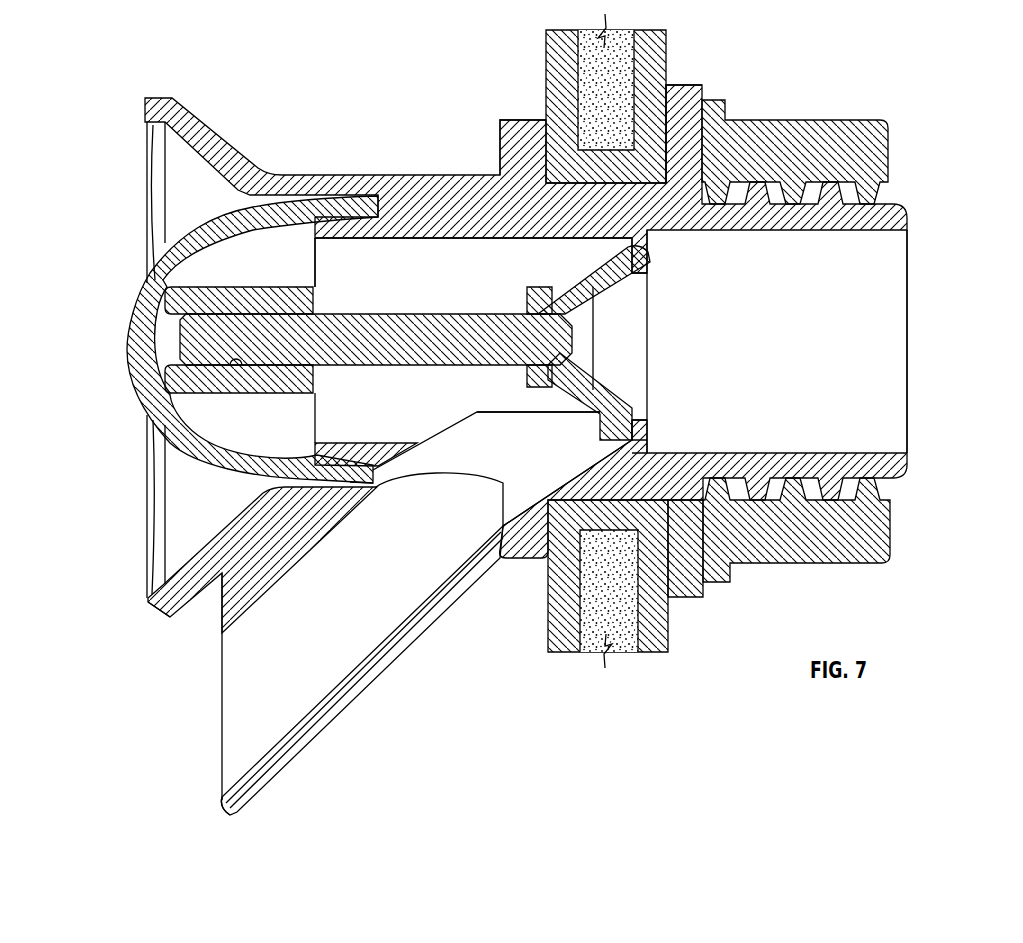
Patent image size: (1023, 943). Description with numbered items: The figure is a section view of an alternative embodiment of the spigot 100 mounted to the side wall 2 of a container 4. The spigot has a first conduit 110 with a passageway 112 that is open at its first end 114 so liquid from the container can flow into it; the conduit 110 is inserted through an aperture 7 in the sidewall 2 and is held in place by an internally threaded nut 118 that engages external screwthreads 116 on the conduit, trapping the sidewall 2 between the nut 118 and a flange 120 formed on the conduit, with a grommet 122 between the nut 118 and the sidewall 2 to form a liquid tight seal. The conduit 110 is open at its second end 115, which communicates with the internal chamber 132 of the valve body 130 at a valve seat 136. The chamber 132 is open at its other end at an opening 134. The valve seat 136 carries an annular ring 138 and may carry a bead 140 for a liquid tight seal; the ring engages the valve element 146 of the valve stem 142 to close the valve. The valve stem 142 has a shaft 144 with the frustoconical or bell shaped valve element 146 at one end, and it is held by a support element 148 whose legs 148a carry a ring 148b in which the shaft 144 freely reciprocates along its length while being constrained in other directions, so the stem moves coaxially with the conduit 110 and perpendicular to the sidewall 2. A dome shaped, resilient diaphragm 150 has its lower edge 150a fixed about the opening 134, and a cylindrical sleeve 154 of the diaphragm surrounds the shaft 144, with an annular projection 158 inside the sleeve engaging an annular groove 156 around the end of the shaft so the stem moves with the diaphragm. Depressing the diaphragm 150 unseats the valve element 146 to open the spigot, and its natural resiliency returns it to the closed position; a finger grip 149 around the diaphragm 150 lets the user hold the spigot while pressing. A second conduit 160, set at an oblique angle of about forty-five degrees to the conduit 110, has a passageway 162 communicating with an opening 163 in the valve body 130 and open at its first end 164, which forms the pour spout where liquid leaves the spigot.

The side wall 2 is at (546, 58).
The container 4 is at (528, 22).
The aperture 7 is at (577, 502).
The spigot 100 is at (531, 428).
The first conduit 110 is at (572, 341).
The passageway 112 is at (820, 232).
The first end 114 is at (890, 263).
The second end 115 is at (654, 418).
The external screwthreads 116 is at (875, 490).
The nut 118 is at (878, 135).
The flange 120 is at (500, 140).
The grommet 122 is at (680, 83).
The valve body 130 is at (395, 170).
The internal chamber 132 is at (407, 240).
The opening 134 is at (318, 265).
The valve seat 136 is at (571, 404).
The annular ring 138 is at (600, 443).
The bead 140 is at (641, 272).
The valve stem 142 is at (435, 339).
The shaft 144 is at (415, 360).
The valve element 146 is at (608, 385).
The support element 148 is at (584, 343).
The legs 148a is at (542, 294).
The ring 148b is at (532, 383).
The finger grip 149 is at (197, 152).
The diaphragm 150 is at (130, 385).
The lower edge 150a is at (372, 488).
The cylindrical sleeve 154 is at (280, 286).
The annular groove 156 is at (280, 380).
The annular projection 158 is at (236, 366).
The second conduit 160 is at (325, 658).
The passageway 162 is at (255, 693).
The opening 163 is at (428, 438).
The first end 164 is at (222, 792).